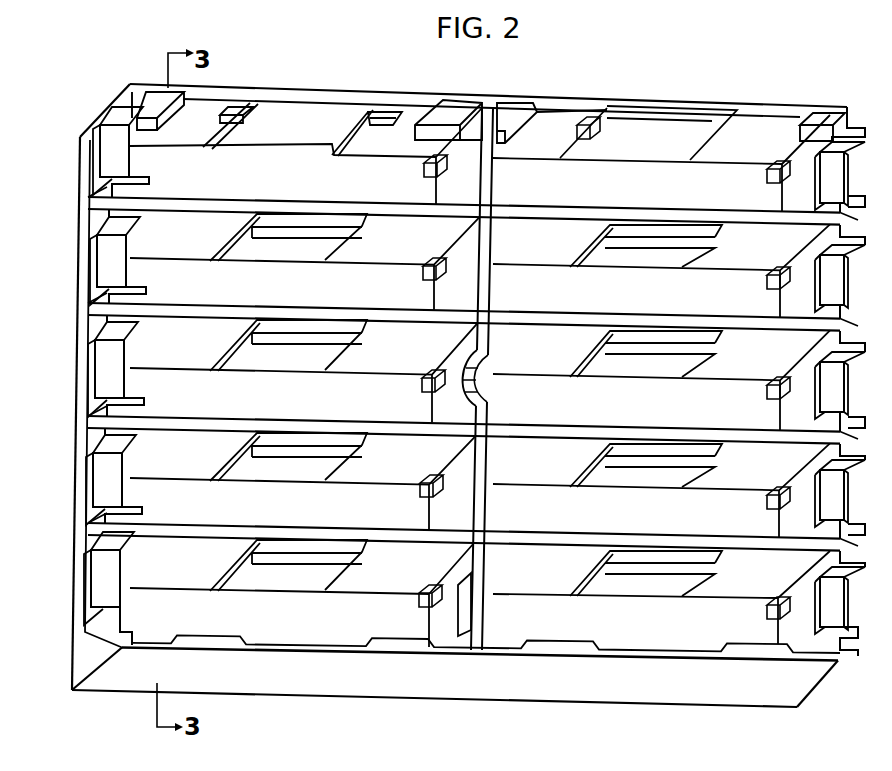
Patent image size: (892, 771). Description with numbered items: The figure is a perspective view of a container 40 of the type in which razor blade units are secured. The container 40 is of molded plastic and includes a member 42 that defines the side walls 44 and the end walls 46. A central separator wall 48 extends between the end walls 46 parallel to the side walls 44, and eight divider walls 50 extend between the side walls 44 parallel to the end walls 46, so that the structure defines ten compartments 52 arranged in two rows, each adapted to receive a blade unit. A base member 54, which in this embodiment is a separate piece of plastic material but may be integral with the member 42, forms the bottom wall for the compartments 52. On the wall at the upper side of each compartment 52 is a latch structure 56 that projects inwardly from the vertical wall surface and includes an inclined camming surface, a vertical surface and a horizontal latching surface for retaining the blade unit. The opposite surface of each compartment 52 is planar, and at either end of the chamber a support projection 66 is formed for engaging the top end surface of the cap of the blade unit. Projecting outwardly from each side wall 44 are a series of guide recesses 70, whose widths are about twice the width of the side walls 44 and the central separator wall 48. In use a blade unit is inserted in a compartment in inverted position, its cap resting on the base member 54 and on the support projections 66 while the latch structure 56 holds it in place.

The container 40 is at (683, 94).
The member 42 is at (382, 684).
The side walls 44 is at (82, 642).
The end walls 46 is at (628, 113).
The central separator wall 48 is at (495, 188).
The divider walls 50 is at (400, 207).
The compartments 52 is at (242, 183).
The base member 54 is at (667, 637).
The latch structure 56 is at (372, 112).
The support projection 66 is at (428, 268).
The guide recesses 70 is at (101, 135).